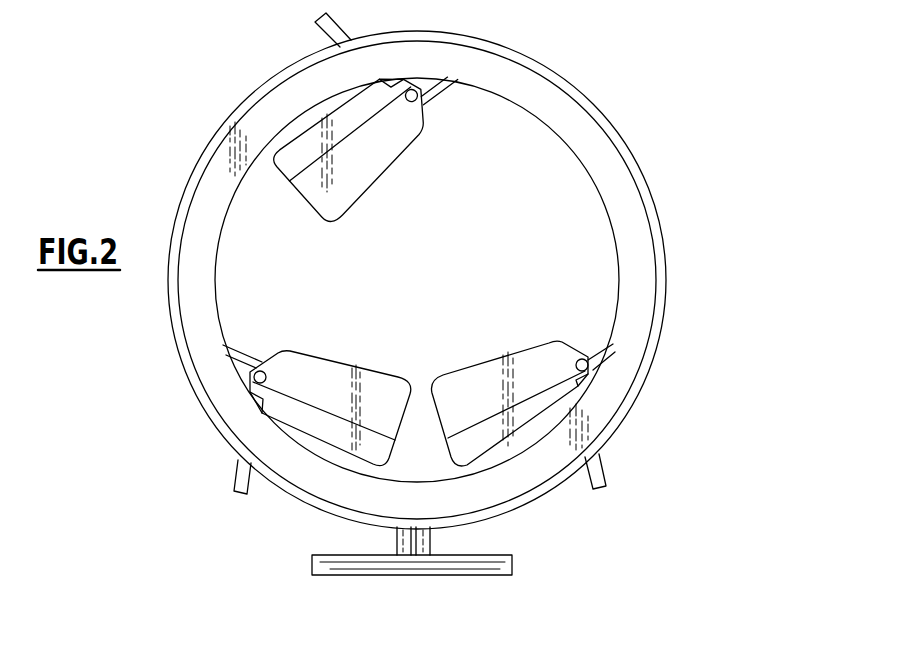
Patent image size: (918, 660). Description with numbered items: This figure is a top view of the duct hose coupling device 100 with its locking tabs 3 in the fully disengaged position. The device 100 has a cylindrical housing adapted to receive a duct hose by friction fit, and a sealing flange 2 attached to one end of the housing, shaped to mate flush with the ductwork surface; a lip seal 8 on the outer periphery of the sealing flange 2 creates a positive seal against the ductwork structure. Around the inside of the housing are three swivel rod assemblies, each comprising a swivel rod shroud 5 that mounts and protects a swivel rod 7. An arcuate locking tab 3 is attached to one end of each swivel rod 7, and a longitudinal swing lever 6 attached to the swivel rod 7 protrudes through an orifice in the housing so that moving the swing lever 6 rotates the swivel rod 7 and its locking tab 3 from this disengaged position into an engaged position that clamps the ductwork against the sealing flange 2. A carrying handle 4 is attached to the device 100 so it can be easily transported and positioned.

The duct hose coupling device 100 is at (208, 80).
The sealing flange 2 is at (632, 203).
The locking tab 3 is at (367, 162).
The carrying handle 4 is at (457, 568).
The swivel rod shroud 5 is at (440, 100).
The swing lever 6 is at (332, 28).
The swivel rod 7 is at (414, 91).
The lip seal 8 is at (528, 500).